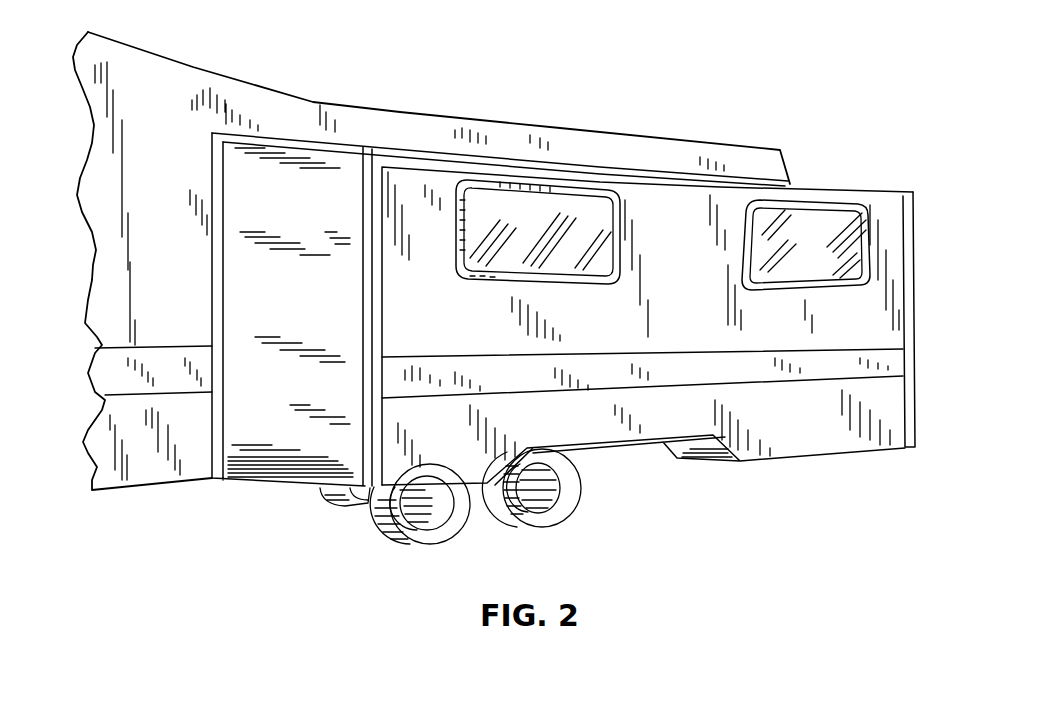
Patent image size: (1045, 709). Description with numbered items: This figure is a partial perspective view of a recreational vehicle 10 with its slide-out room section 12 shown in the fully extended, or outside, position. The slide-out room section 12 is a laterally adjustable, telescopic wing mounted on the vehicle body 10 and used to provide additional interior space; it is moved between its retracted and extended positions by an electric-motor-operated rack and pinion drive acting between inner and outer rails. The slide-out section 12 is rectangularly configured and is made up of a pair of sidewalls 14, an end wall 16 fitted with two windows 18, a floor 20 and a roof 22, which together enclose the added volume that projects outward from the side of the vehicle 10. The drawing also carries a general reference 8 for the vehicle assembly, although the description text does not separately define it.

The recreational vehicle 8 is at (680, 124).
The recreational vehicle 10 is at (178, 313).
The slide-out room section 12 is at (870, 188).
The sidewalls 14 is at (293, 433).
The end wall 16 is at (687, 370).
The windows 18 is at (613, 283).
The floor 20 is at (803, 462).
The roof 22 is at (478, 155).